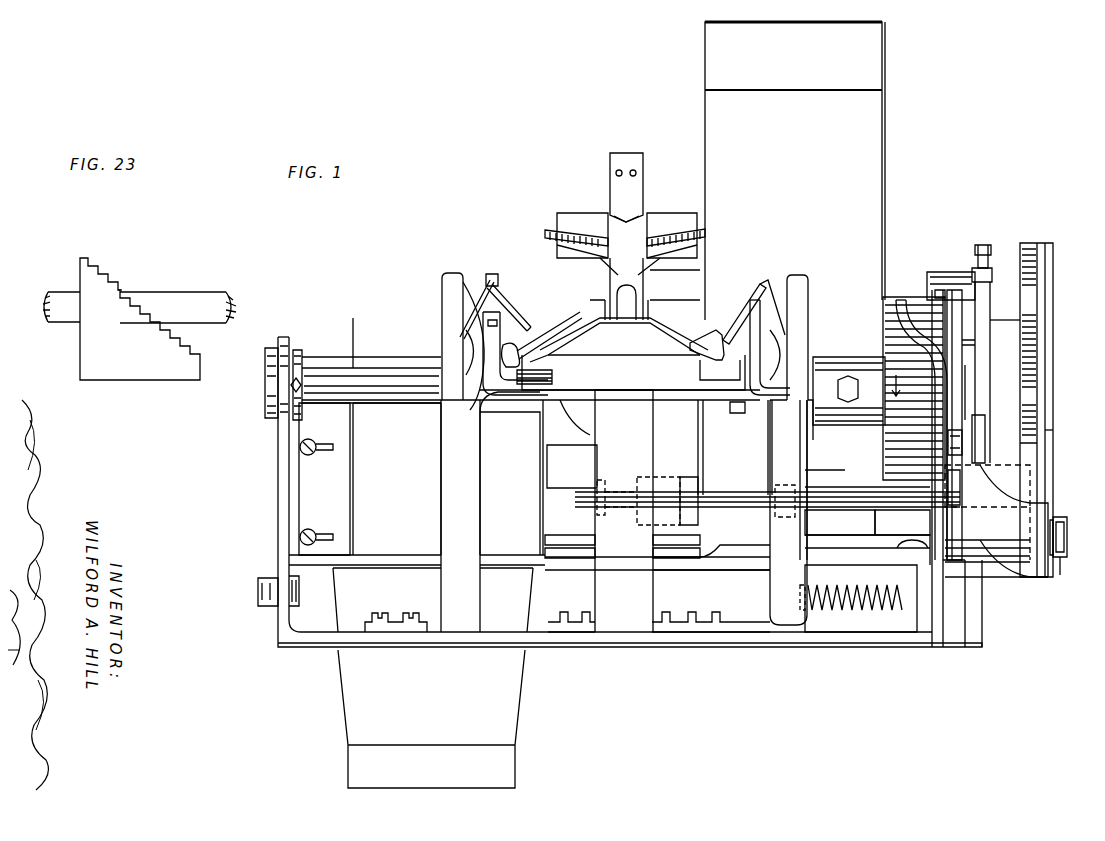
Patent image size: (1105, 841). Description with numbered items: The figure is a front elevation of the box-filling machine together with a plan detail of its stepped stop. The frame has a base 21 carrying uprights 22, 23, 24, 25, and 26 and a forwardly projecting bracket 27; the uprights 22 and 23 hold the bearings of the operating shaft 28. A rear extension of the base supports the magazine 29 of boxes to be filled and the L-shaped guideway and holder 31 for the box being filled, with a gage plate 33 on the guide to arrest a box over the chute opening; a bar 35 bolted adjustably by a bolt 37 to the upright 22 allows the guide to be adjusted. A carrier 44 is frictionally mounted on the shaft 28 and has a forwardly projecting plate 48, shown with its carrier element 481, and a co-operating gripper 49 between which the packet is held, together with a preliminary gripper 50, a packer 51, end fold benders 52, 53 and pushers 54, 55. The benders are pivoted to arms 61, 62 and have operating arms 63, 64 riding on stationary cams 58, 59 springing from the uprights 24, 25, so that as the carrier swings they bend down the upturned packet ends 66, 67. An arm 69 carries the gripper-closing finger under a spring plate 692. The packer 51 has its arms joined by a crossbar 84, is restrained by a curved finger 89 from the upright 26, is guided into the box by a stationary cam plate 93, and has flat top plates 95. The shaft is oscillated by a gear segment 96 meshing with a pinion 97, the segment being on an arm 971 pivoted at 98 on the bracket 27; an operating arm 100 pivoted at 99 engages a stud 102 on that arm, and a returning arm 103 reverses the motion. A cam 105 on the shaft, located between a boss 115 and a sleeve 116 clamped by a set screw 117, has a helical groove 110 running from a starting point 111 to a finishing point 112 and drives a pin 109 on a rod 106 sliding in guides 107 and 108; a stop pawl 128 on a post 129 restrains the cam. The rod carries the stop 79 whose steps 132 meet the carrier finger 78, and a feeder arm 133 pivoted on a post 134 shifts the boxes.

In FIG. 1, the base 21 is at (730, 640).
In FIG. 1, the upright 22 is at (282, 484).
In FIG. 1, the upright 23 is at (980, 332).
In FIG. 1, the upright 24 is at (456, 452).
In FIG. 1, the upright 25 is at (808, 450).
In FIG. 1, the upright 26 is at (640, 452).
In FIG. 1, the forwardly projecting bracket 27 is at (945, 580).
In FIG. 1, the operating shaft 28 is at (392, 368).
In FIG. 1, the magazine 29 is at (795, 171).
In FIG. 1, the guideway and holder 31 is at (397, 423).
In FIG. 1, the gage plate 33 is at (352, 290).
In FIG. 1, the bar 35 is at (262, 586).
In FIG. 1, the bolt 37 is at (272, 600).
In FIG. 1, the carrier 44 is at (620, 384).
In FIG. 1, the forwardly projecting plate 48 is at (655, 338).
In FIG. 1, the gripper 49 is at (580, 243).
In FIG. 1, the preliminary gripper 50 is at (625, 275).
In FIG. 1, the packer 51 is at (678, 268).
In FIG. 1, the end fold bender 52 is at (490, 276).
In FIG. 1, the end fold bender 53 is at (758, 284).
In FIG. 1, the pusher 54 is at (540, 438).
In FIG. 1, the pusher 55 is at (712, 330).
In FIG. 1, the stationary cam 58 is at (455, 273).
In FIG. 1, the stationary cam 59 is at (805, 282).
In FIG. 1, the arm 61 is at (500, 318).
In FIG. 1, the arm 62 is at (762, 330).
In FIG. 1, the operating arm 63 is at (470, 318).
In FIG. 1, the operating arm 64 is at (775, 310).
In FIG. 1, the upturned end of packet 66 is at (566, 542).
In FIG. 1, the upturned end of packet 67 is at (680, 545).
In FIG. 1, the arm 69 is at (640, 154).
In FIG. 1, the spring plate 692 is at (634, 200).
In FIG. 1, the finger 78 is at (650, 300).
In FIG. 23, the stop 79 is at (140, 319).
In FIG. 1, the stop 79 is at (668, 483).
In FIG. 1, the crossbar 84 is at (605, 302).
In FIG. 1, the curved finger 89 is at (571, 422).
In FIG. 1, the stationary cam plate 93 is at (572, 466).
In FIG. 1, the top plates 95 is at (570, 216).
In FIG. 1, the actuating gear segment 96 is at (1005, 330).
In FIG. 1, the pinion 97 is at (996, 501).
In FIG. 1, the arm 971 is at (1046, 430).
In FIG. 1, the pivot 98 is at (1063, 553).
In FIG. 1, the pivot point 99 is at (970, 472).
In FIG. 1, the operating arm 100 is at (950, 312).
In FIG. 1, the stud 102 is at (950, 500).
In FIG. 1, the returning arm 103 is at (975, 445).
In FIG. 1, the cam 105 is at (882, 300).
In FIG. 23, the rod 106 is at (197, 293).
In FIG. 1, the rod 106 is at (738, 494).
In FIG. 1, the guide 107 is at (808, 475).
In FIG. 1, the guide 108 is at (605, 490).
In FIG. 1, the stud or pin 109 is at (900, 487).
In FIG. 1, the helical portion of cam groove 110 is at (905, 300).
In FIG. 1, the starting point 111 is at (900, 322).
In FIG. 1, the finishing point 112 is at (965, 352).
In FIG. 1, the boss 115 is at (968, 378).
In FIG. 1, the sleeve 116 is at (846, 358).
In FIG. 1, the set screw 117 is at (850, 400).
In FIG. 1, the stop pawl 128 is at (930, 278).
In FIG. 1, the post 129 is at (958, 270).
In FIG. 23, the steps 132 is at (120, 293).
In FIG. 1, the feeder arm 133 is at (836, 543).
In FIG. 1, the post 134 is at (912, 598).
In FIG. 1, the flange 481 is at (568, 355).